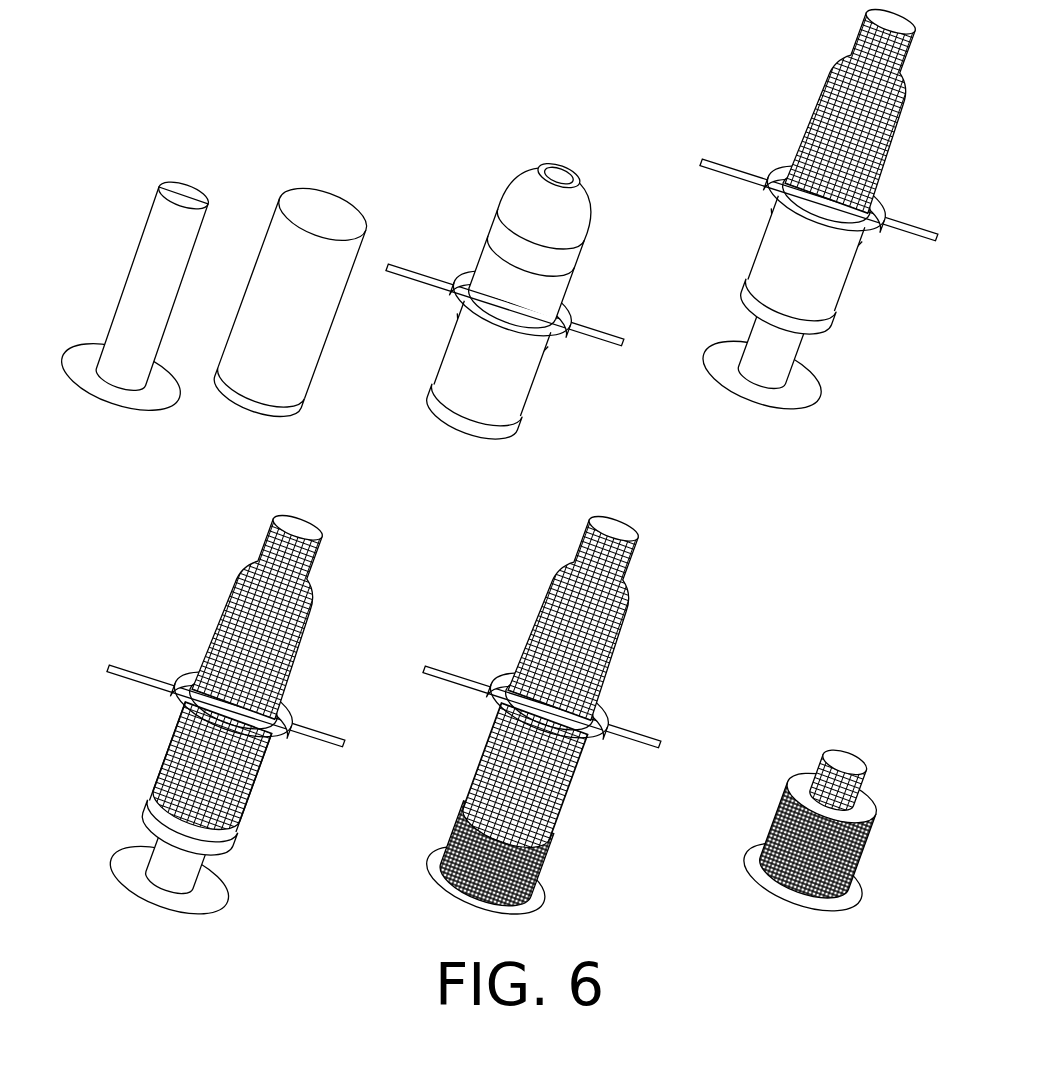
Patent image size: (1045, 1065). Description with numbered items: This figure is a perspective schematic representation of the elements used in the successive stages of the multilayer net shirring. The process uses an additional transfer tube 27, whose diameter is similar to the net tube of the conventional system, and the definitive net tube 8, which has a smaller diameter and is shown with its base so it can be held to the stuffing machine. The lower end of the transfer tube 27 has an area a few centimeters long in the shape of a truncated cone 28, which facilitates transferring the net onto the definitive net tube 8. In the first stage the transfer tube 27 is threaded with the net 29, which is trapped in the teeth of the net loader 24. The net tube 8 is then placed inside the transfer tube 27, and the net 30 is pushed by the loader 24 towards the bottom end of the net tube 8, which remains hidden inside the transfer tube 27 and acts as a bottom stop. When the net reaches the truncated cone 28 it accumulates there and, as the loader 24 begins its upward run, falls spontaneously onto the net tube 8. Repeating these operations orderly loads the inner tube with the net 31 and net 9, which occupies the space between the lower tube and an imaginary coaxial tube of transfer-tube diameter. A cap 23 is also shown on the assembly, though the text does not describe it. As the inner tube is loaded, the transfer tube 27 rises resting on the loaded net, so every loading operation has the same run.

The net tube 8 is at (143, 278).
The net 9 is at (827, 828).
The cap 23 is at (512, 225).
The net loader 24 is at (543, 337).
The transfer tube 27 is at (287, 298).
The truncated cone 28 is at (813, 333).
The net 29 is at (790, 163).
The net 30 is at (249, 796).
The net 31 is at (552, 847).